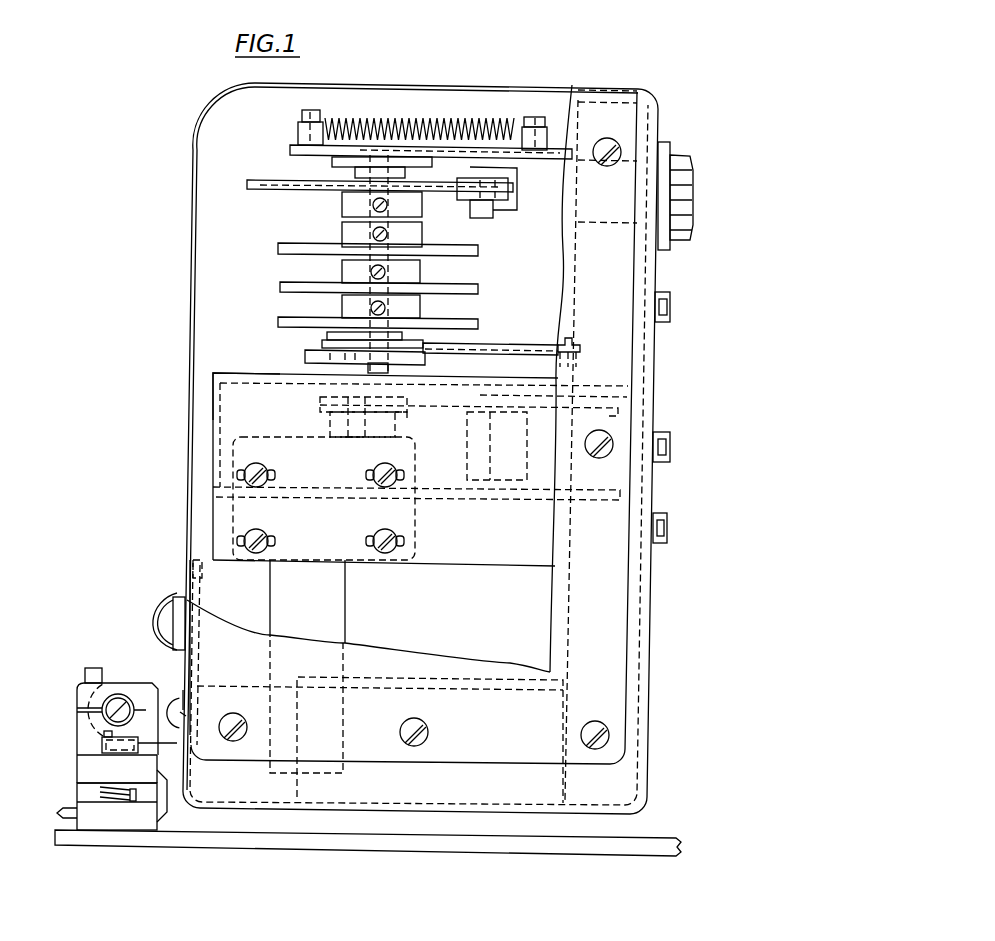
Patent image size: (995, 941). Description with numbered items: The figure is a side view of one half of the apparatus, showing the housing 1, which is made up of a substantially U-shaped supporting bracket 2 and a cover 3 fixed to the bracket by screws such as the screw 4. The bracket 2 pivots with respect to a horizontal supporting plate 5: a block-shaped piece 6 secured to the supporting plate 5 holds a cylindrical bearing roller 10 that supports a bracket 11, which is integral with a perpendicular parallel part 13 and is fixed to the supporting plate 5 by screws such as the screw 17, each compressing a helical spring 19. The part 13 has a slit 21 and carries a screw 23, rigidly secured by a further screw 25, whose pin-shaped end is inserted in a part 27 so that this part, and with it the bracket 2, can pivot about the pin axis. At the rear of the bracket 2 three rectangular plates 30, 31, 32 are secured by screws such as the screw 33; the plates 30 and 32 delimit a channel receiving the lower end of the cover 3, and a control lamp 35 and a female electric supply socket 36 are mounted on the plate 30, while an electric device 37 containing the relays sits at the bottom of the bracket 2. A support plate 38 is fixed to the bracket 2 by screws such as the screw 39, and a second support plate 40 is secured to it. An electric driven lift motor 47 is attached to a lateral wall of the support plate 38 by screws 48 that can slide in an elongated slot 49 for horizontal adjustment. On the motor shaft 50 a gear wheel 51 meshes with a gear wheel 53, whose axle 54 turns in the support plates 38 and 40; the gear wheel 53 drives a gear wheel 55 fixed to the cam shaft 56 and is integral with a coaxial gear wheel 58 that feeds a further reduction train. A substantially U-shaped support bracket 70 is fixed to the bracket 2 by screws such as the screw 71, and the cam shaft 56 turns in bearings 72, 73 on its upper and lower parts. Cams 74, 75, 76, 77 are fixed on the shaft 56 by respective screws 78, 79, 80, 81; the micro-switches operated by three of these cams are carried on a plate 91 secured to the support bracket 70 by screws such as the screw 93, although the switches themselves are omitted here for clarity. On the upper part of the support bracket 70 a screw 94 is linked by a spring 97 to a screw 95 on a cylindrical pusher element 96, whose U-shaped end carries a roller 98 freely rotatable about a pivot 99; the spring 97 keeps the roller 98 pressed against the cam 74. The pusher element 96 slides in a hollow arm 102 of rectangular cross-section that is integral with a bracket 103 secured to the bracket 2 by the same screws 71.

The housing 1 is at (449, 79).
The supporting bracket 2 is at (653, 373).
The cover 3 is at (225, 100).
The screw 4 is at (256, 697).
The supporting plate 5 is at (362, 842).
The block-shaped piece 6 is at (113, 817).
The cylindrical bearing roller 10 is at (75, 813).
The bracket 11 is at (98, 772).
The parallel part 13 is at (156, 684).
The screw 17 is at (100, 740).
The helical spring 19 is at (132, 800).
The slit 21 is at (77, 710).
The screw 23 is at (102, 705).
The screw 25 is at (92, 671).
The part 27 is at (172, 692).
The rectangular plate 30 is at (183, 563).
The rectangular plate 31 is at (187, 690).
The rectangular plate 32 is at (195, 585).
The screw 33 is at (180, 715).
The control lamp 35 is at (150, 622).
The female electric supply socket 36 is at (183, 595).
The electric device 37 is at (457, 675).
The support plate 38 is at (238, 373).
The screw 39 is at (655, 460).
The support plate 40 is at (425, 493).
The lift motor 47 is at (413, 560).
The screw 48 is at (270, 480).
The elongated slot 49 is at (268, 455).
The shaft 50 is at (350, 437).
The gear wheel 51 is at (337, 428).
The gear wheel 53 is at (548, 413).
The axle 54 is at (498, 470).
The gear wheel 55 is at (398, 428).
The shaft 56 is at (305, 360).
The gear wheel 58 is at (500, 430).
The support bracket 70 is at (295, 147).
The screw 71 is at (670, 308).
The bearing 72 is at (332, 162).
The bearing 73 is at (425, 348).
The cam 74 is at (300, 190).
The cam 75 is at (278, 250).
The cam 76 is at (280, 288).
The cam 77 is at (278, 323).
The screw 78 is at (388, 205).
The screw 79 is at (388, 234).
The screw 80 is at (386, 272).
The screw 81 is at (386, 308).
The plate 91 is at (518, 342).
The screw 93 is at (570, 338).
The screw 94 is at (303, 120).
The screw 95 is at (530, 140).
The pusher element 96 is at (552, 192).
The spring 97 is at (466, 118).
The roller 98 is at (470, 188).
The pivot 99 is at (482, 212).
The hollow arm 102 is at (676, 155).
The bracket 103 is at (660, 240).